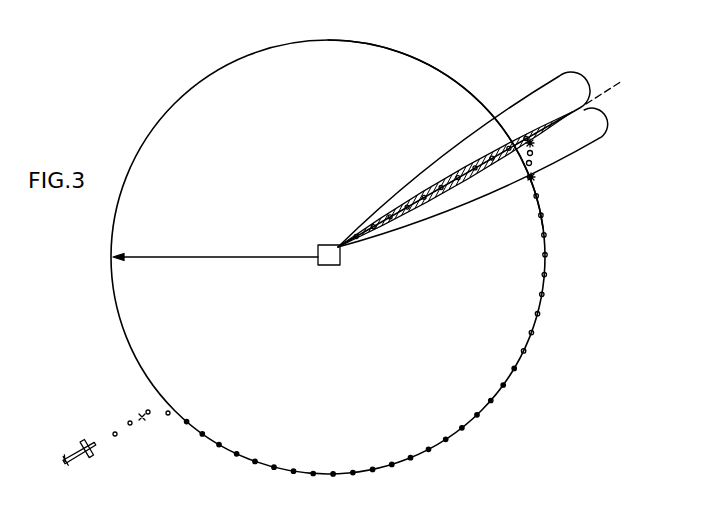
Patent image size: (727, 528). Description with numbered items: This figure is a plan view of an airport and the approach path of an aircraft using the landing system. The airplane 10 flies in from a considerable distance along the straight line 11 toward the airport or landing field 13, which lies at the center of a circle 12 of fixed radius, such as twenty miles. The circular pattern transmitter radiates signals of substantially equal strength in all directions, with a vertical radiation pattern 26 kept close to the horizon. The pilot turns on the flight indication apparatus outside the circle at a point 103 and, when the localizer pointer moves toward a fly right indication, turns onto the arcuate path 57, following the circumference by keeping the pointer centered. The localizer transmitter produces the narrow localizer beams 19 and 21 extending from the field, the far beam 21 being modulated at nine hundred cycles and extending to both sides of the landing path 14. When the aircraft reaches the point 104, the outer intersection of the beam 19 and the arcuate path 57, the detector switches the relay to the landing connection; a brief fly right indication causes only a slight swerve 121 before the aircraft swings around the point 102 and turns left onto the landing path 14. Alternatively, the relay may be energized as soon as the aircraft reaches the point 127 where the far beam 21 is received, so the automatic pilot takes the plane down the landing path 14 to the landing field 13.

The airplane 10 is at (74, 449).
The straight line 11 is at (127, 423).
The circle 12 is at (127, 337).
The airport or landing field 13 is at (322, 240).
The landing path 14 is at (622, 81).
The localizer beam 19 is at (608, 118).
The far localizer beam 21 is at (584, 78).
The vertical radiation pattern 26 is at (466, 86).
The arcuate path 57 is at (391, 466).
The point 102 is at (516, 140).
The point 103 is at (146, 421).
The point 104 is at (536, 178).
The slight swerve 121 is at (533, 153).
The point 127 is at (534, 143).